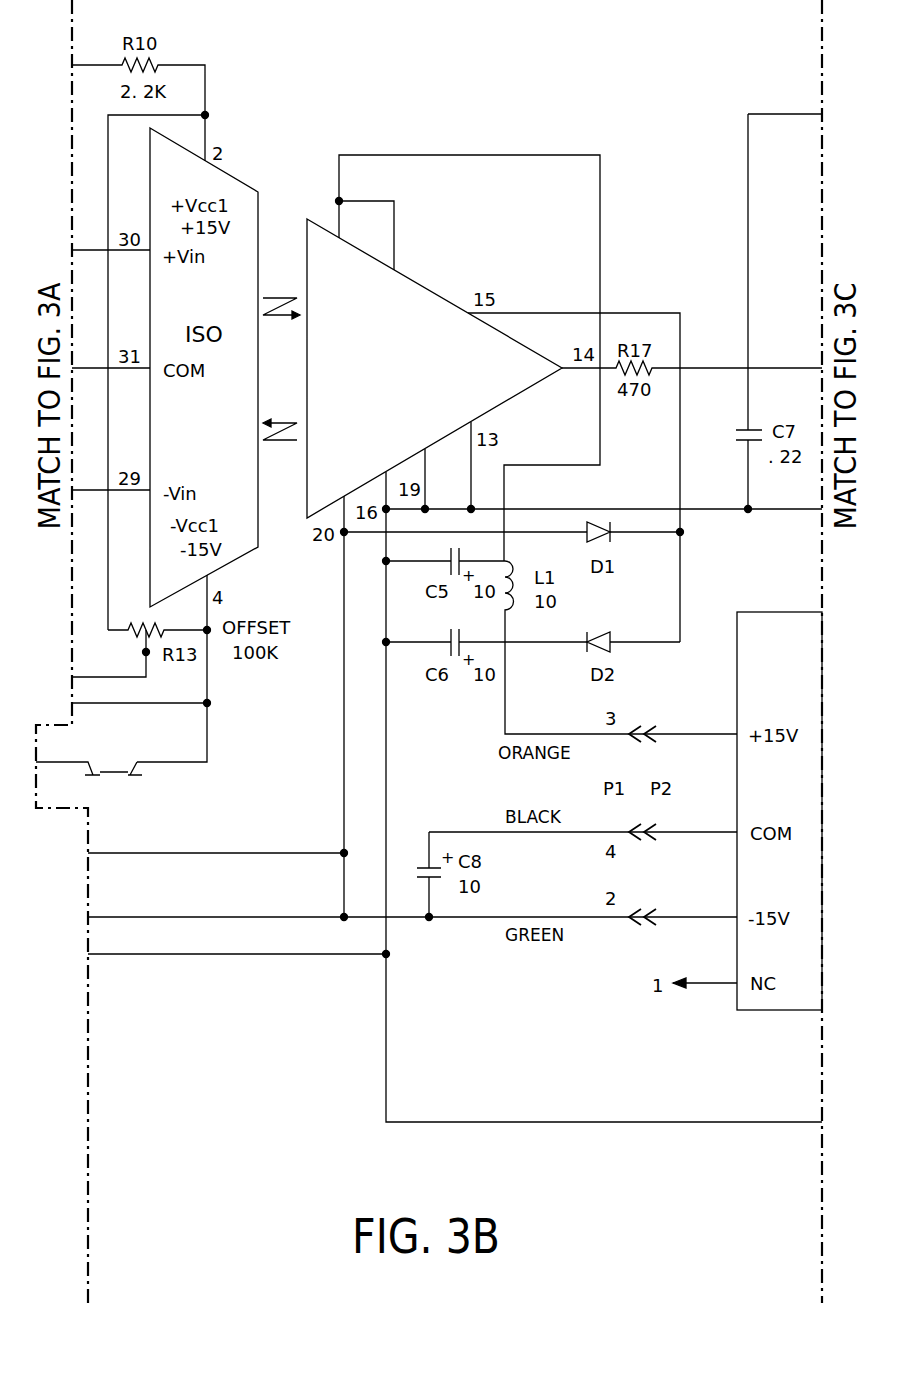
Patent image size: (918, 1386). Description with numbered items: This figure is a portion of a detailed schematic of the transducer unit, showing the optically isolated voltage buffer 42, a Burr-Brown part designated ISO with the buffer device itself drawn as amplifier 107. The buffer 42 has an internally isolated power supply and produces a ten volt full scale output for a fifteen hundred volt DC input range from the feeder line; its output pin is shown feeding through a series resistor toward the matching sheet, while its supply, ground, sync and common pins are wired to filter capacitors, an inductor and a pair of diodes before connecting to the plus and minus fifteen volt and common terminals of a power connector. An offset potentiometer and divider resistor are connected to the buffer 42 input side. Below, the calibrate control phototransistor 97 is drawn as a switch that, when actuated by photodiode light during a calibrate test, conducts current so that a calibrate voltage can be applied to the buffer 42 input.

The optically isolated voltage buffer 42 is at (453, 358).
The calibrate control phototransistor 97 is at (112, 772).
The power amplifier 107 is at (472, 230).